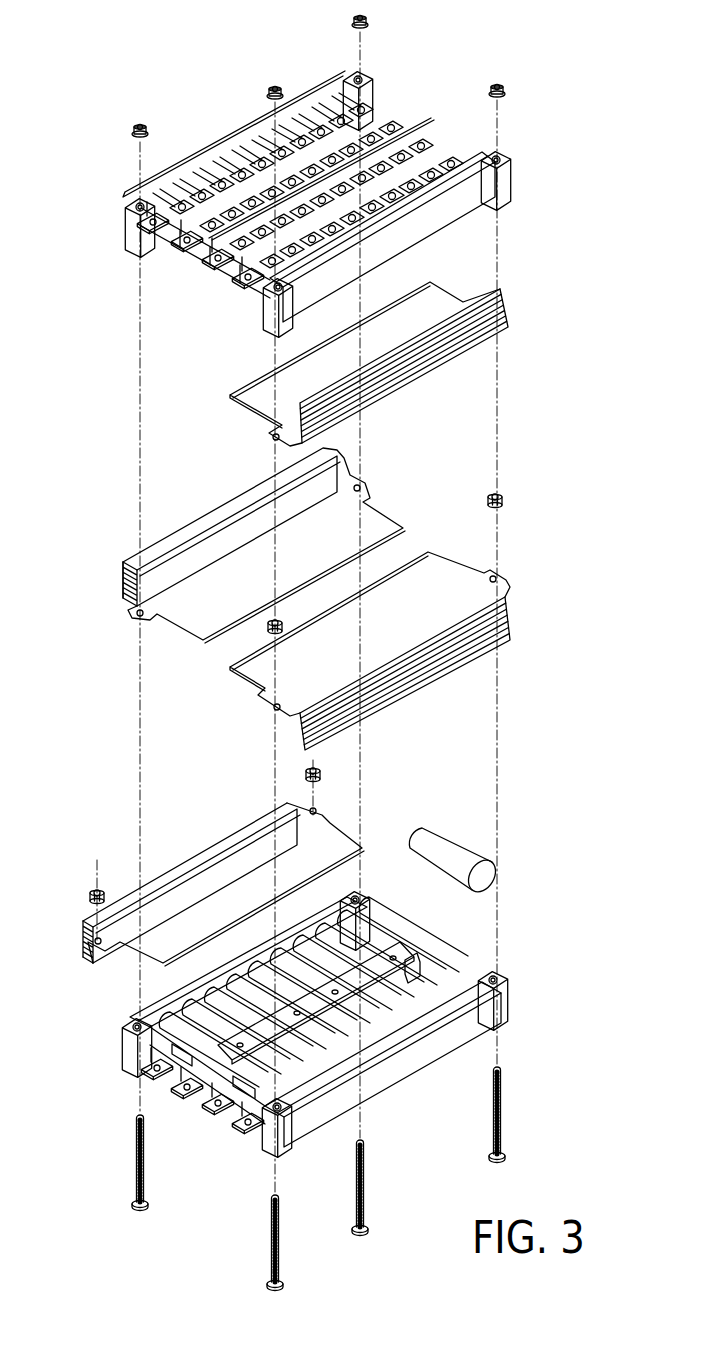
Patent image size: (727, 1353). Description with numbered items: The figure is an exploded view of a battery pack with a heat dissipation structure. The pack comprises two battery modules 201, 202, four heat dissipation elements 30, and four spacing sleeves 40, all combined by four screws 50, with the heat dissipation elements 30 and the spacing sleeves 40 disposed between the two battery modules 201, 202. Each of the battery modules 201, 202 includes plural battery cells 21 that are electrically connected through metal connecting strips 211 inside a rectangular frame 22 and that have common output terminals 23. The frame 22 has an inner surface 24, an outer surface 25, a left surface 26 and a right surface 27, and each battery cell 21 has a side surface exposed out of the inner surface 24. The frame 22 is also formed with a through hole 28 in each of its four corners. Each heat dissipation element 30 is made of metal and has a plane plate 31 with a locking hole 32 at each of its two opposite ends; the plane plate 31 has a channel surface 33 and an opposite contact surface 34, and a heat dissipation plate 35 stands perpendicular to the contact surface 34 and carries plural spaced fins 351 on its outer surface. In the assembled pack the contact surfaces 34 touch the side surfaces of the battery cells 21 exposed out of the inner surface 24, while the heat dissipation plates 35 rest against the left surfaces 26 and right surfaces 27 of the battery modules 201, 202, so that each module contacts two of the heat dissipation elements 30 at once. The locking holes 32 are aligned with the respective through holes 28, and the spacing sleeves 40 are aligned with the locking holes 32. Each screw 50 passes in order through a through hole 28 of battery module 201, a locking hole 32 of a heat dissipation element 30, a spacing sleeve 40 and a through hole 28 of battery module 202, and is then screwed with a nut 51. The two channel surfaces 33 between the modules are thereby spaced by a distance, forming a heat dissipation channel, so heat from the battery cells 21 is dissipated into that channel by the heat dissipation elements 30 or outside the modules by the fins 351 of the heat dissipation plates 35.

The battery module 201 is at (524, 1003).
The battery module 202 is at (550, 146).
The battery cell 21 is at (472, 862).
The metal connecting strip 211 is at (335, 95).
The rectangular frame 22 is at (482, 216).
The common output terminal 23 is at (150, 226).
The inner surface 24 is at (463, 997).
The outer surface 25 is at (410, 170).
The left surface 26 is at (480, 196).
The right surface 27 is at (218, 145).
The through hole 28 is at (364, 74).
The heat dissipation element 30 is at (470, 288).
The plane plate 31 is at (247, 402).
The locking hole 32 is at (273, 441).
The channel surface 33 is at (398, 586).
The contact surface 34 is at (388, 326).
The heat dissipation plate 35 is at (205, 545).
The fin 351 is at (497, 333).
The spacing sleeve 40 is at (502, 494).
The screw 50 is at (503, 1102).
The nut 51 is at (352, 18).